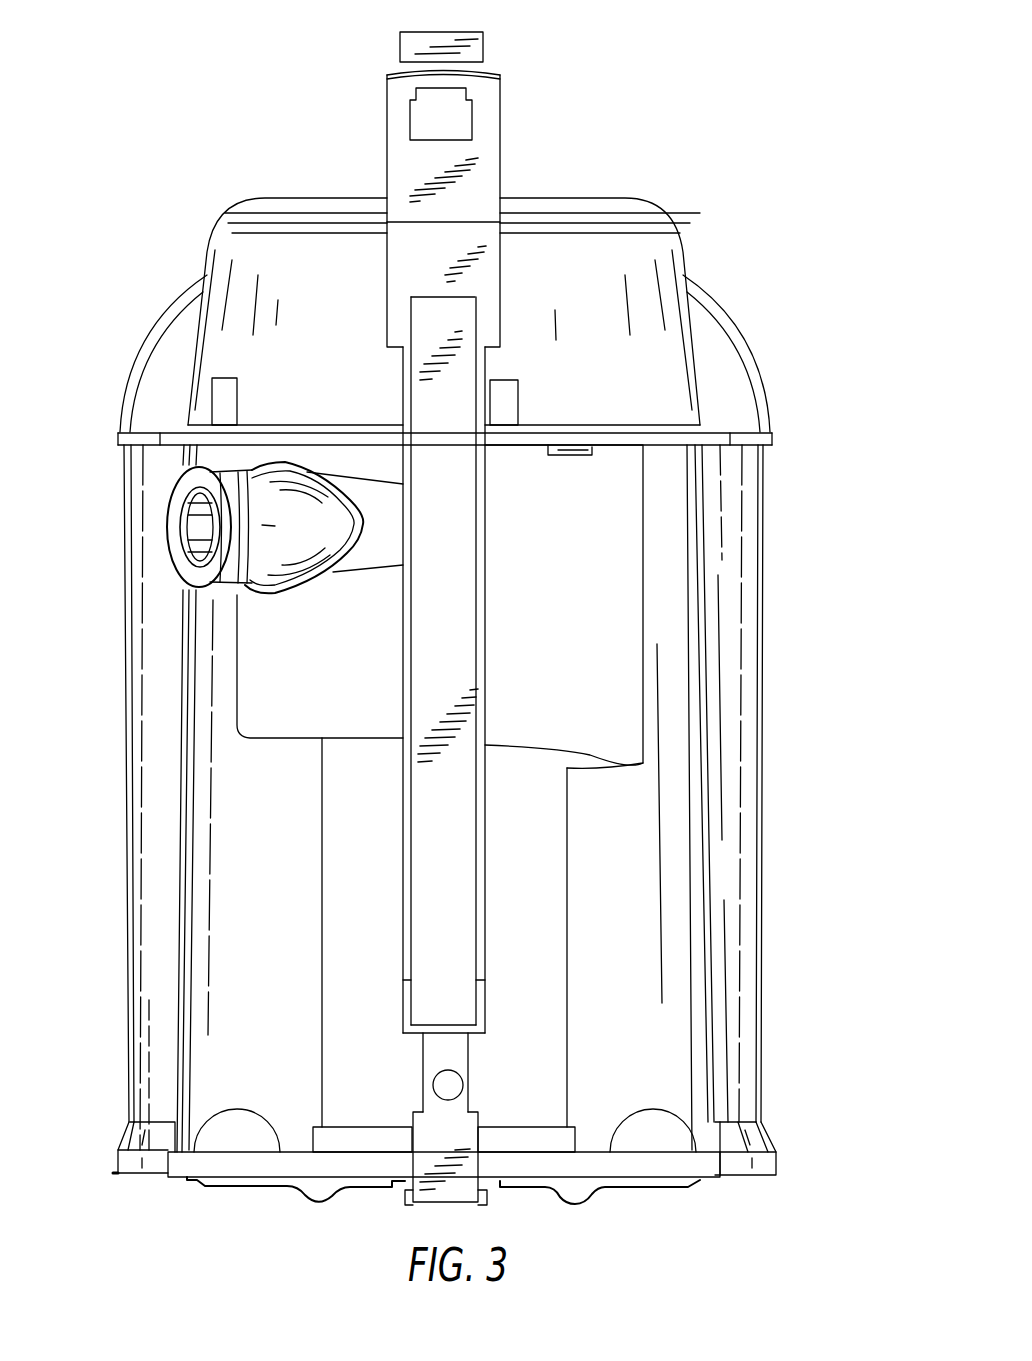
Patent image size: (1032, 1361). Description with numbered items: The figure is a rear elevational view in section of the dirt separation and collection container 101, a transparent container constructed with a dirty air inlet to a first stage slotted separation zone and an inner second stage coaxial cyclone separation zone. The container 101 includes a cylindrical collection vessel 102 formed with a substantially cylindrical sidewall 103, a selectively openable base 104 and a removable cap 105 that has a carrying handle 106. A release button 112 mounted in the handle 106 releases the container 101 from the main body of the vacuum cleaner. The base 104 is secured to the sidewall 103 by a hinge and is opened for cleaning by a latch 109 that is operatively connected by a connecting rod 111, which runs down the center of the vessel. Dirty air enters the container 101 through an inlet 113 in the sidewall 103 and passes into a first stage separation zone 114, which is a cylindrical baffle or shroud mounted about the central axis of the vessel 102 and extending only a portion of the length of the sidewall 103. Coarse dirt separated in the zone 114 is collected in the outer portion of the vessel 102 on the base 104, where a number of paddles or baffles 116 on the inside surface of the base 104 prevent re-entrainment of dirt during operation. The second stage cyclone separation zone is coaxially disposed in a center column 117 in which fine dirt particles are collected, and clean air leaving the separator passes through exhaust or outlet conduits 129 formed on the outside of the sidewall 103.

The dirt separation and collection container 101 is at (803, 479).
The cylindrical collection vessel 102 is at (707, 770).
The cylindrical sidewall 103 is at (715, 993).
The selectively openable base 104 is at (700, 1168).
The removable cap 105 is at (683, 245).
The carrying handle 106 is at (500, 110).
The latch 109 is at (410, 1195).
The connecting rod 111 is at (464, 927).
The release button 112 is at (400, 44).
The inlet 113 is at (213, 527).
The first stage separation zone 114 is at (566, 611).
The paddles or baffles 116 is at (673, 1130).
The center column 117 is at (320, 942).
The exhaust or outlet conduits 129 is at (732, 637).